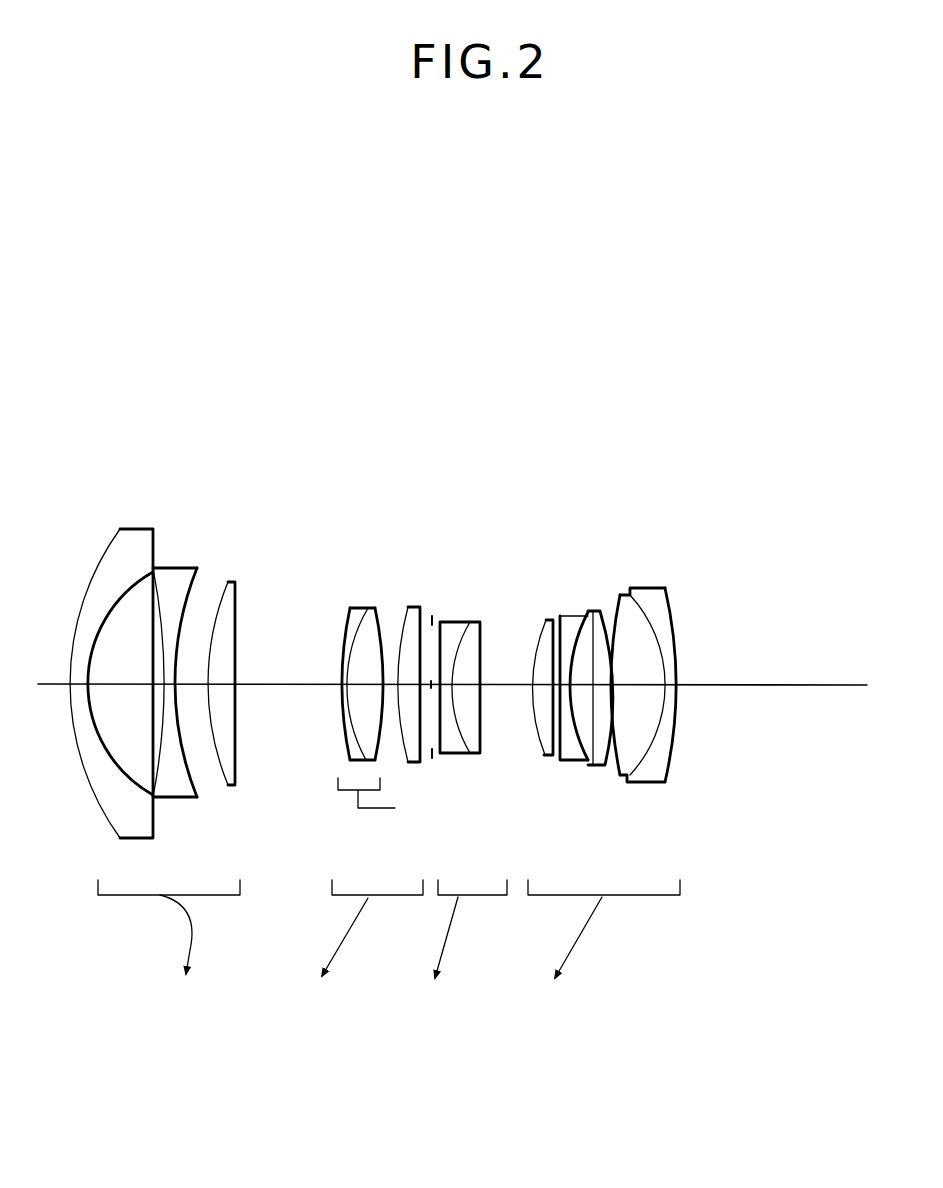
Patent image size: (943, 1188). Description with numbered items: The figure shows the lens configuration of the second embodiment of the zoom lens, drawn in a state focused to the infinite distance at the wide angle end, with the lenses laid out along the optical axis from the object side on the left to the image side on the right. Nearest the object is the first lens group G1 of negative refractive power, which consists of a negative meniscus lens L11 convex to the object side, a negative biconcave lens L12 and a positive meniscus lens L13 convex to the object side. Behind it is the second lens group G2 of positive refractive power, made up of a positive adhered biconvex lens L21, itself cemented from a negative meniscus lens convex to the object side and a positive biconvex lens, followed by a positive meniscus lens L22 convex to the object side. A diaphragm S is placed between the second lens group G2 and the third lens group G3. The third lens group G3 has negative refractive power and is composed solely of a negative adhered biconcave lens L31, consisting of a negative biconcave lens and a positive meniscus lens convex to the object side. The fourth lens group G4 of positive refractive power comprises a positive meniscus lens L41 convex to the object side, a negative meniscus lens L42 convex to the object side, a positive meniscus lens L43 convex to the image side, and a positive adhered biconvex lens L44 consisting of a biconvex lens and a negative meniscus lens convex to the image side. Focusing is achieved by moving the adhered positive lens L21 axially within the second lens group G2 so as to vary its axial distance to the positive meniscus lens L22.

The first lens group G1 is at (250, 428).
The second lens group G2 is at (322, 428).
The third lens group G3 is at (528, 428).
The fourth lens group G4 is at (685, 428).
The negative meniscus lens L11 is at (132, 535).
The negative biconcave lens L12 is at (178, 578).
The positive meniscus lens L13 is at (232, 588).
The adhered positive biconvex lens L21 is at (335, 573).
The positive meniscus lens L22 is at (415, 615).
The diaphragm S is at (433, 620).
The adhered negative biconcave lens L31 is at (495, 573).
The positive meniscus lens L41 is at (552, 621).
The negative meniscus lens L42 is at (572, 617).
The positive meniscus lens L43 is at (607, 615).
The adhered positive biconvex lens L44 is at (625, 573).